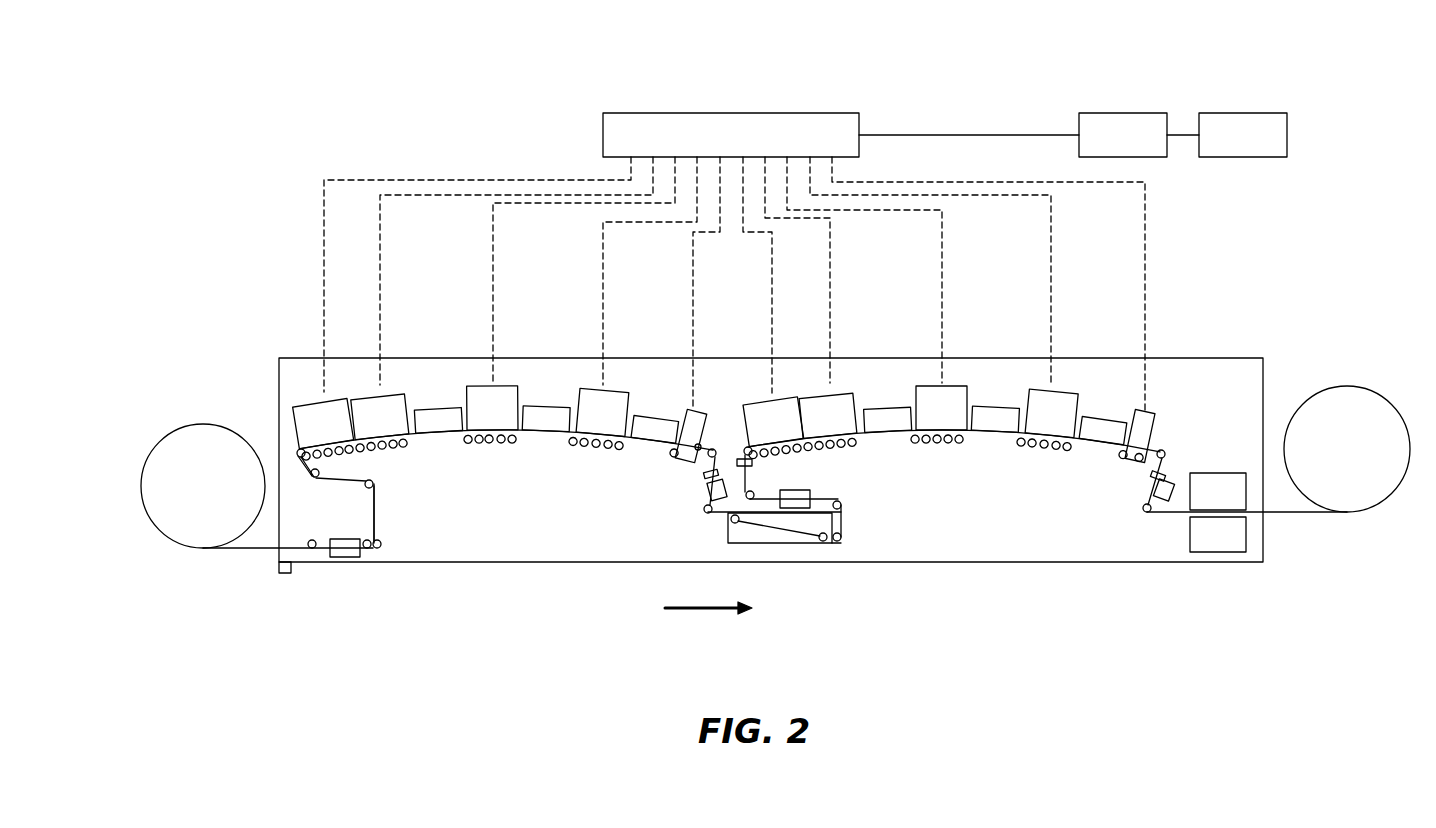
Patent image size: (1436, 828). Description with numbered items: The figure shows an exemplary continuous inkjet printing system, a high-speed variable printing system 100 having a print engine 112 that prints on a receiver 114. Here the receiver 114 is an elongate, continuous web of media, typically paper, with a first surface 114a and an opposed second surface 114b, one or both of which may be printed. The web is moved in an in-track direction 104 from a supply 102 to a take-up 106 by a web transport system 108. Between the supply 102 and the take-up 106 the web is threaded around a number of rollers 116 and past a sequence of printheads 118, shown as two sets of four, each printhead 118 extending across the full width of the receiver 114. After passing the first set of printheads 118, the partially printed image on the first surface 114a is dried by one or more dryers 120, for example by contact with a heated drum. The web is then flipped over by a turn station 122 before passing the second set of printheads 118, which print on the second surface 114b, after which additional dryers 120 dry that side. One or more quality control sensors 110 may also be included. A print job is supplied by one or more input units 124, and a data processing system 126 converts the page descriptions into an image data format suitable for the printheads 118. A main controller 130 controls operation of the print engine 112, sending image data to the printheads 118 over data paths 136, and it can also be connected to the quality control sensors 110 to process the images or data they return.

The high-speed variable printing system 100 is at (265, 138).
The supply 102 is at (184, 428).
The in-track direction 104 is at (705, 610).
The take-up 106 is at (1325, 385).
The web transport system 108 is at (570, 591).
The quality control sensor 110 is at (693, 412).
The print engine 112 is at (297, 357).
The receiver 114 is at (1290, 514).
The first surface 114a is at (374, 511).
The second surface 114b is at (377, 492).
The roller 116 is at (382, 543).
The printhead 118 is at (323, 392).
The dryer 120 is at (438, 405).
The turn station 122 is at (797, 543).
The input unit 124 is at (1246, 113).
The data processing system 126 is at (1126, 113).
The main controller 130 is at (736, 113).
The data path 136 is at (324, 245).